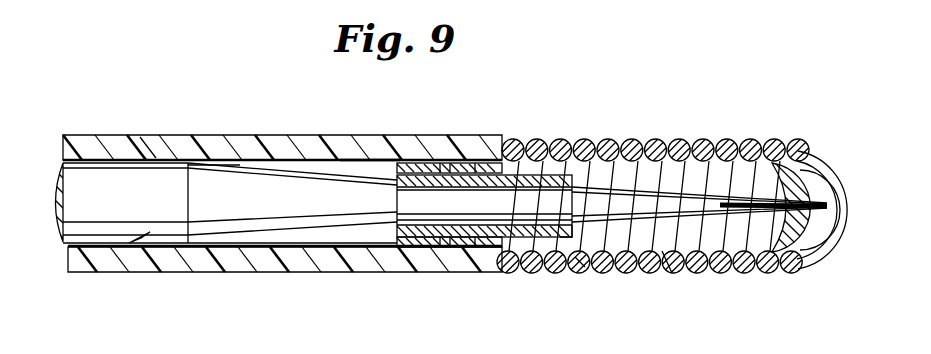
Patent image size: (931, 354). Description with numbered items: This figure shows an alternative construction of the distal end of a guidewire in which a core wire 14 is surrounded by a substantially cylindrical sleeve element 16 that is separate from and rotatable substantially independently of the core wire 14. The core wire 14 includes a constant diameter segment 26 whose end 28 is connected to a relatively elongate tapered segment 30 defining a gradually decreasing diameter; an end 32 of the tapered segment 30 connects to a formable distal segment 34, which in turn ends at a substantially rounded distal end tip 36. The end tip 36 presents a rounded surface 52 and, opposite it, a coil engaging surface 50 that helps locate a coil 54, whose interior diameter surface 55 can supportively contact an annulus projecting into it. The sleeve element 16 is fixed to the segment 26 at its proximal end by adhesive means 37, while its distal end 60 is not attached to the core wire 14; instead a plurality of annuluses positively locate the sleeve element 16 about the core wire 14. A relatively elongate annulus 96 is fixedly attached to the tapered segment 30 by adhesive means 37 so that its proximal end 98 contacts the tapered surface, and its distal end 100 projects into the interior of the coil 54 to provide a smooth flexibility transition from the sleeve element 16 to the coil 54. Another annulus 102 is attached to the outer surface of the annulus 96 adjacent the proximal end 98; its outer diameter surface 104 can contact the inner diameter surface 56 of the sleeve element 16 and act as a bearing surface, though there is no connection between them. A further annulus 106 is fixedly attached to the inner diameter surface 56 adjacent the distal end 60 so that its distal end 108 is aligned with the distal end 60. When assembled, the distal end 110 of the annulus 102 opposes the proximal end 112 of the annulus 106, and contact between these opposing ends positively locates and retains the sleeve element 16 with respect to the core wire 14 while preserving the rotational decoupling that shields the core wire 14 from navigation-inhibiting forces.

The core wire 14 is at (113, 247).
The sleeve element 16 is at (280, 146).
The constant diameter segment 26 is at (105, 218).
The end of the constant diameter segment 28 is at (192, 182).
The tapered segment 30 is at (237, 213).
The end of the tapered segment 32 is at (783, 138).
The formable distal segment 34 is at (777, 257).
The distal end tip 36 is at (823, 163).
The adhesive means 37 is at (150, 152).
The coil engaging surface 50 is at (747, 262).
The rounded surface 52 is at (847, 190).
The coil 54 is at (675, 274).
The interior diameter surface of the coil 55 is at (678, 168).
The inner diameter surface of the sleeve element 56 is at (233, 165).
The distal end of the sleeve element 60 is at (500, 310).
The elongate annulus 96 is at (548, 240).
The proximal end of the elongate annulus 98 is at (397, 180).
The distal end of the elongate annulus 100 is at (593, 188).
The annulus 102 is at (355, 152).
The outer diameter surface of annulus 102 104 is at (427, 162).
The annulus 106 is at (481, 163).
The distal end of annulus 106 108 is at (577, 182).
The distal end of annulus 102 110 is at (463, 164).
The proximal end of annulus 106 112 is at (445, 163).